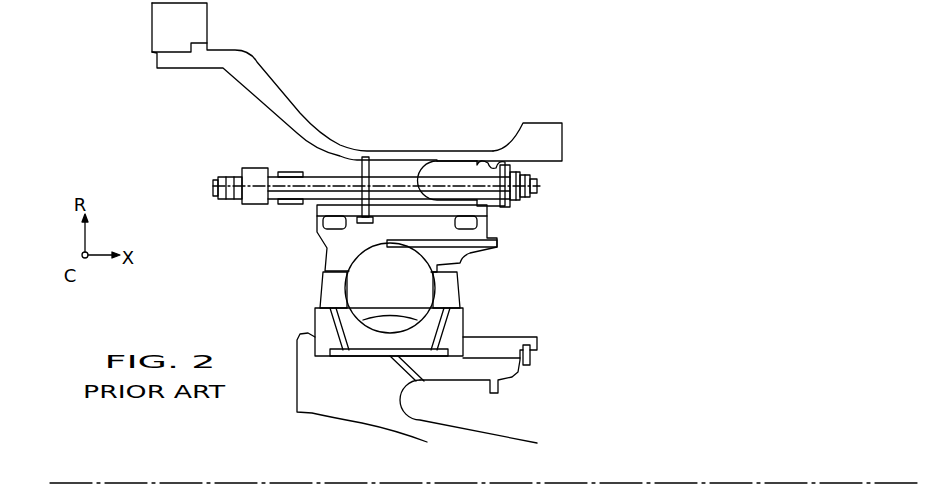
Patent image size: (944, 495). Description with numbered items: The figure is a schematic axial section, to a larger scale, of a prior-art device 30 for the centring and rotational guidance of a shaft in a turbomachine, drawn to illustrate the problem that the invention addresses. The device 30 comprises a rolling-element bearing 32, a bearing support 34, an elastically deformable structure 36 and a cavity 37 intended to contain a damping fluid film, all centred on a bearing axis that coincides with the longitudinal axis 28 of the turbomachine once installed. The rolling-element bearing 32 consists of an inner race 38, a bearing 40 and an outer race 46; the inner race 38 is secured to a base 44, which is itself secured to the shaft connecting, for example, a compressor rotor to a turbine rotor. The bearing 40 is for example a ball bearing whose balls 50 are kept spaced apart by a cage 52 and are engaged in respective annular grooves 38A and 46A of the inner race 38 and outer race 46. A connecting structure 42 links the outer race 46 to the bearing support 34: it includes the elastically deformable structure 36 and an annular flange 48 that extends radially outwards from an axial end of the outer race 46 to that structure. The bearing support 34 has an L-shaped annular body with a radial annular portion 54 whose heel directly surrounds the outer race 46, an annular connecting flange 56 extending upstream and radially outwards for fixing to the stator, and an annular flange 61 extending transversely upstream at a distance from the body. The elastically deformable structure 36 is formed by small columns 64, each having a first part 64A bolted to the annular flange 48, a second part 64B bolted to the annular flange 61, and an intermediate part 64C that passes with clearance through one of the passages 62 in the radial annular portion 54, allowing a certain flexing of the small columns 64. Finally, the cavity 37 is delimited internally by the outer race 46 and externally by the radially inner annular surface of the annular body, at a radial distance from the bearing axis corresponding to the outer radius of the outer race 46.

The longitudinal axis 28 is at (57, 482).
The device 30 is at (618, 243).
The rolling-element bearing 32 is at (212, 233).
The bearing support 34 is at (451, 142).
The elastically deformable structure 36 is at (241, 159).
The cavity 37 is at (445, 213).
The inner race 38 is at (405, 321).
The annular groove 38A is at (360, 250).
The bearing 40 is at (310, 290).
The connecting structure 42 is at (294, 170).
The base 44 is at (325, 390).
The outer race 46 is at (404, 266).
The annular groove 46A is at (442, 309).
The annular flange 48 is at (516, 203).
The balls 50 is at (422, 293).
The cage 52 is at (452, 278).
The radial annular portion 54 is at (396, 166).
The annular connecting flange 56 is at (253, 77).
The annular flange 61 is at (253, 203).
The passages 62 is at (352, 156).
The small columns 64 is at (396, 156).
The first part 64A is at (542, 186).
The second part 64B is at (213, 187).
The intermediate part 64C is at (358, 162).